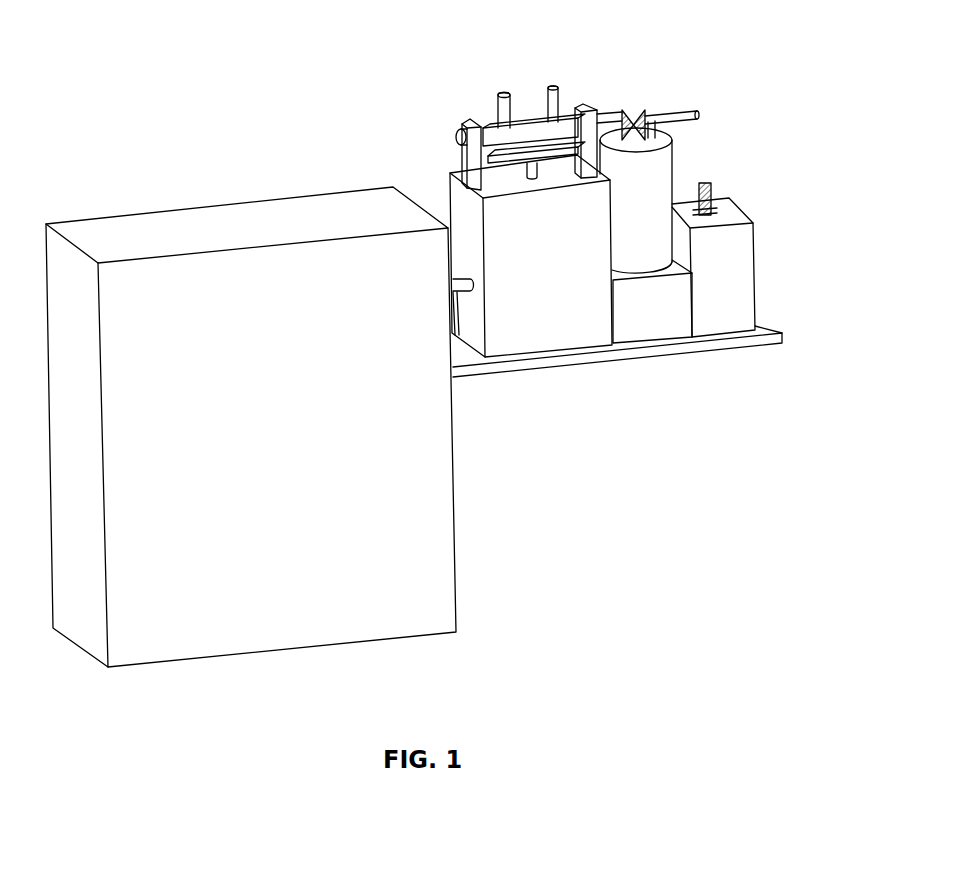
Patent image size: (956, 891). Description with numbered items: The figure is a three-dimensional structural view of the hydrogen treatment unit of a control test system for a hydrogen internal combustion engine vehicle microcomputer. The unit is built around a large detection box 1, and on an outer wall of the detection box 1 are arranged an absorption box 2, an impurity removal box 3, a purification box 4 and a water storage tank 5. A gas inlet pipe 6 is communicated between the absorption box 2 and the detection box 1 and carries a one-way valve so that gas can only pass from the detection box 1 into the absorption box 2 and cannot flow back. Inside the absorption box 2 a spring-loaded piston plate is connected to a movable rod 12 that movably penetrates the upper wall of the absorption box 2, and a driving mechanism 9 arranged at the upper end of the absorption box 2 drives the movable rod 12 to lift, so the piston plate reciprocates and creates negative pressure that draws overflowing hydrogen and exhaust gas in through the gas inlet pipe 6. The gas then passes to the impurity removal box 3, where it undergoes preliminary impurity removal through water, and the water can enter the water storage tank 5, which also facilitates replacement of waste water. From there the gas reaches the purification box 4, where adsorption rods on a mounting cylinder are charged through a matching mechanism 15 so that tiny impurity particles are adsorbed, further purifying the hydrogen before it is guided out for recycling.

The detection box 1 is at (198, 224).
The absorption box 2 is at (553, 332).
The impurity removal box 3 is at (668, 318).
The purification box 4 is at (657, 193).
The water storage tank 5 is at (745, 292).
The gas inlet pipe 6 is at (458, 282).
The driving mechanism 9 is at (502, 113).
The movable rod 12 is at (532, 162).
The matching mechanism 15 is at (636, 123).